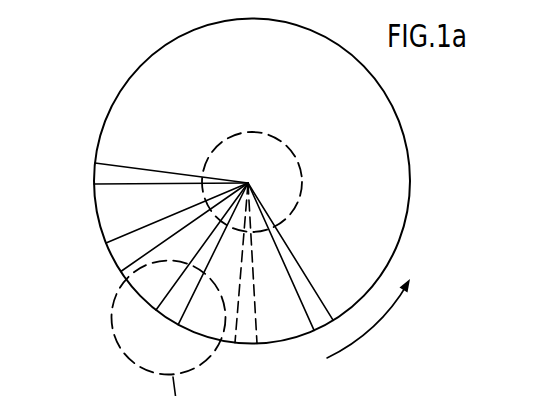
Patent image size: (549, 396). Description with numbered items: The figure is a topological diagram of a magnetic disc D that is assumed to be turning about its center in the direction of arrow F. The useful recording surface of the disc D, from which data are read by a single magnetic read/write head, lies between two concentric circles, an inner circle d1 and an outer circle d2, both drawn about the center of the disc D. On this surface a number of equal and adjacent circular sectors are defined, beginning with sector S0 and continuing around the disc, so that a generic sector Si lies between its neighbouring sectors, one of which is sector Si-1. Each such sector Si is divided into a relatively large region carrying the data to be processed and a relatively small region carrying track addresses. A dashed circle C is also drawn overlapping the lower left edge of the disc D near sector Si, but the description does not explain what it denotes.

The magnetic disc D is at (410, 182).
The concentric circle (outer) d2 is at (110, 110).
The concentric circle (inner) d1 is at (204, 162).
The circular sector Si is at (121, 277).
The circular sector Si-1 is at (229, 345).
The circular sector S0 is at (285, 345).
The circle / read area C is at (110, 318).
The arrow (direction of rotation) F is at (368, 318).